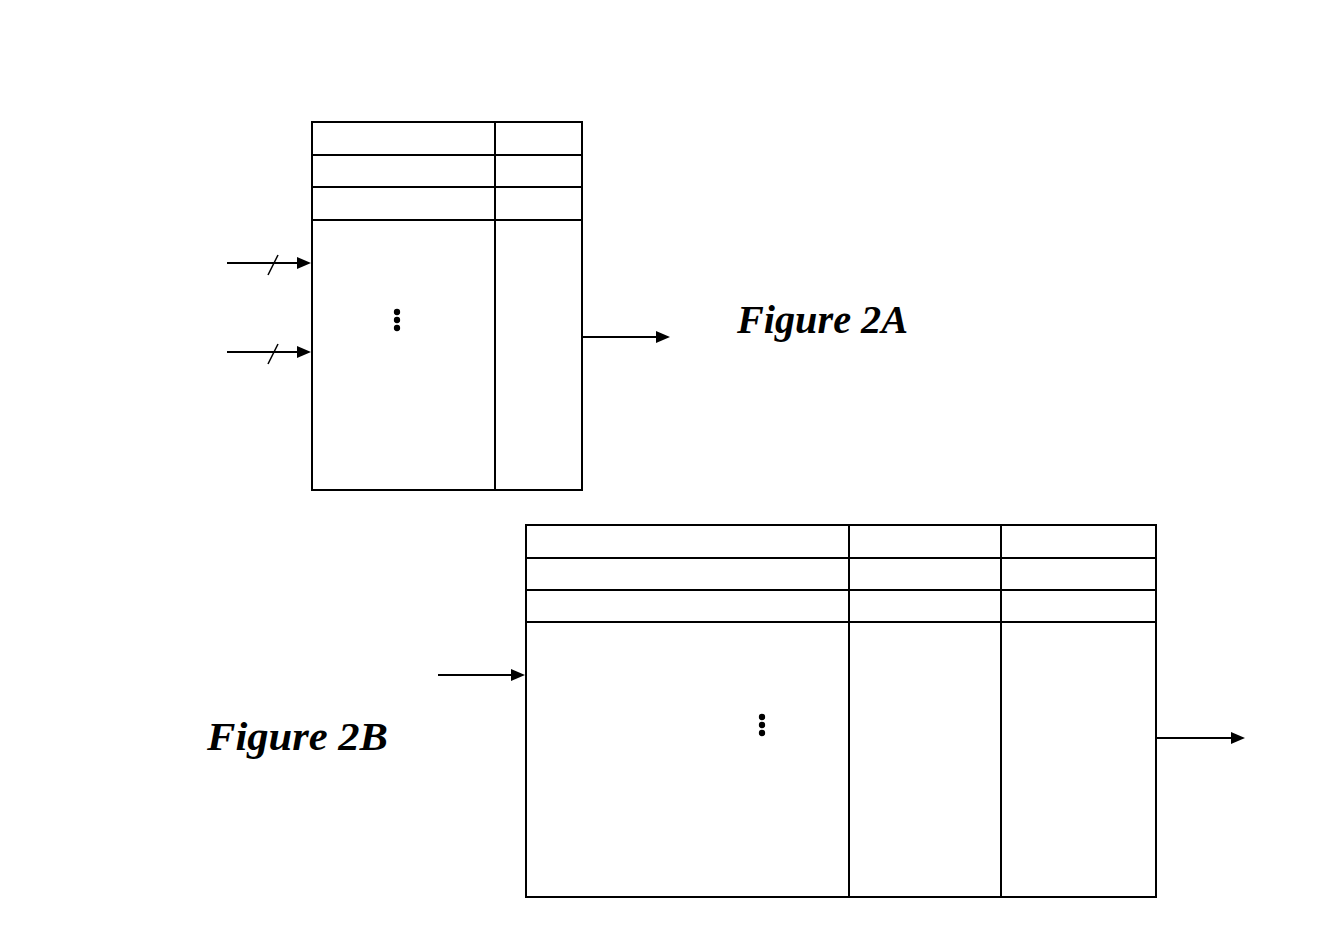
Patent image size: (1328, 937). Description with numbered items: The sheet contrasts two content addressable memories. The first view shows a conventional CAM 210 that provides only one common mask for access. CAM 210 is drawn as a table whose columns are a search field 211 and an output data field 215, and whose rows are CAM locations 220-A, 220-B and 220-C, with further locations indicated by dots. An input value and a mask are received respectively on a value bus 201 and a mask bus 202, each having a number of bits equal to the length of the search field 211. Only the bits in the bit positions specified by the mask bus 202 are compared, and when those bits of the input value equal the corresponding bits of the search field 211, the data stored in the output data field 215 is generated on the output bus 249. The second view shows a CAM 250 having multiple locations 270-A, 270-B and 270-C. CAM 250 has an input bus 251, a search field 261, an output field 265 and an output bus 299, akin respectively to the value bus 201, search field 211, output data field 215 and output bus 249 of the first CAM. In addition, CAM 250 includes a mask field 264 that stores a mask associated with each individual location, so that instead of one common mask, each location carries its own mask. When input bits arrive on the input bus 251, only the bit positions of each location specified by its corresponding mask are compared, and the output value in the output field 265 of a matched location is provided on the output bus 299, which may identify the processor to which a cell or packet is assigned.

In FIG. 2A, the CAM 210 is at (602, 55).
In FIG. 2A, the search field 211 is at (405, 118).
In FIG. 2A, the output data field 215 is at (546, 118).
In FIG. 2A, the CAM location 220-A is at (583, 132).
In FIG. 2A, the CAM location 220-B is at (583, 175).
In FIG. 2A, the CAM location 220-C is at (583, 207).
In FIG. 2A, the value bus 201 is at (258, 262).
In FIG. 2A, the mask bus 202 is at (258, 350).
In FIG. 2A, the output bus 249 is at (650, 333).
In FIG. 2B, the CAM 250 is at (1177, 458).
In FIG. 2B, the search field 261 is at (663, 522).
In FIG. 2B, the mask field 264 is at (920, 522).
In FIG. 2B, the output field 265 is at (1121, 522).
In FIG. 2B, the CAM location 270-A is at (1157, 533).
In FIG. 2B, the CAM location 270-B is at (1157, 577).
In FIG. 2B, the CAM location 270-C is at (1157, 610).
In FIG. 2B, the input bus 251 is at (473, 673).
In FIG. 2B, the output bus 299 is at (1223, 735).